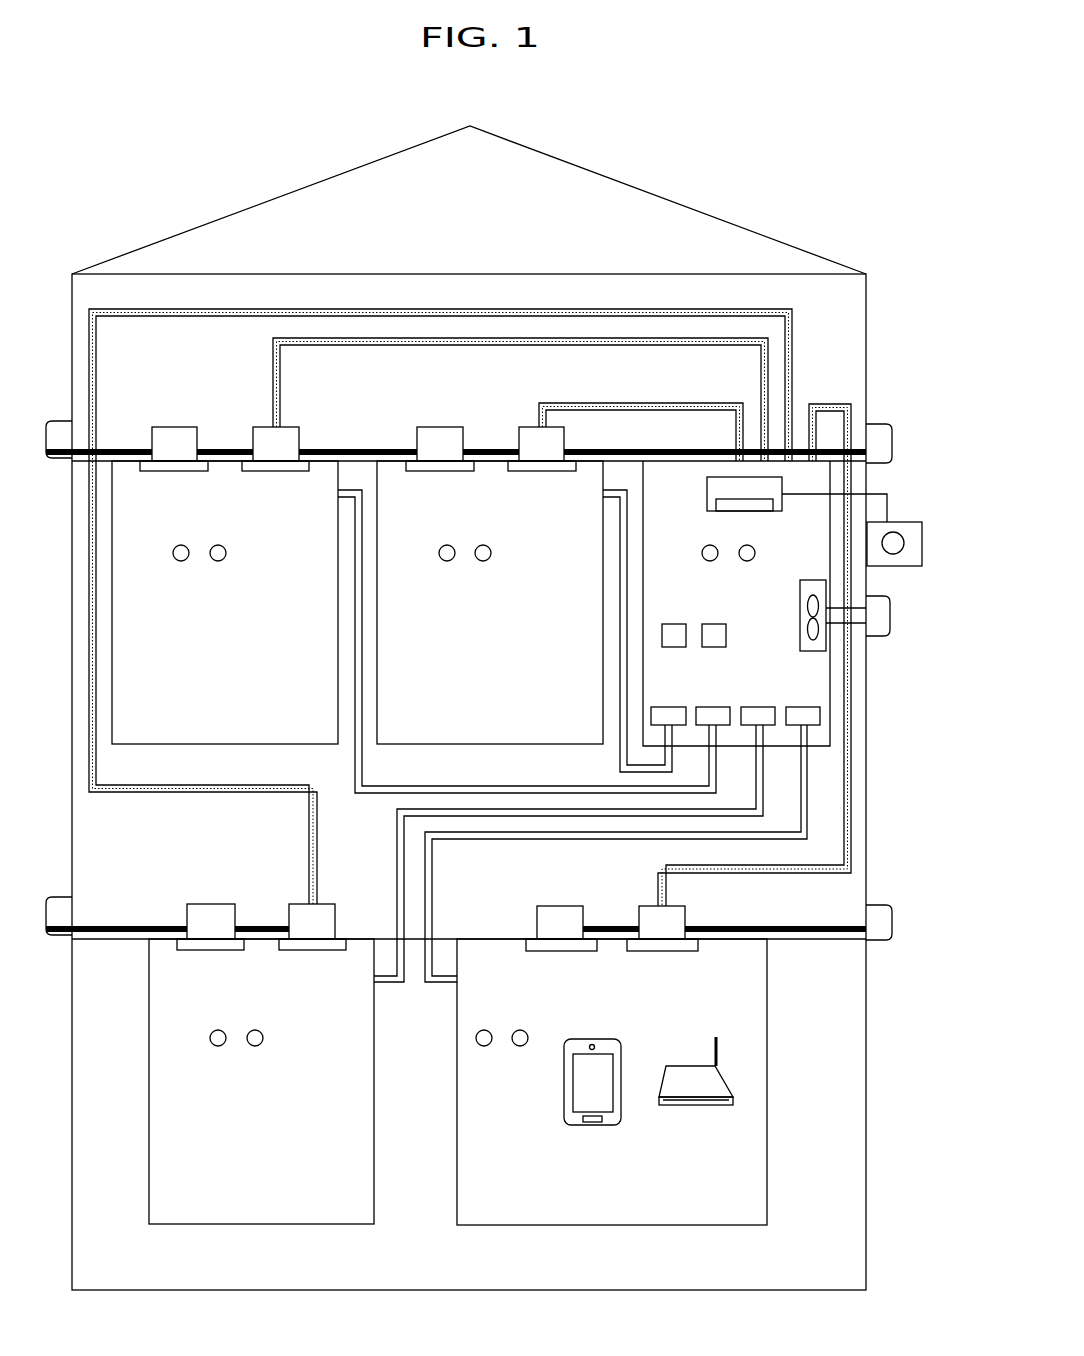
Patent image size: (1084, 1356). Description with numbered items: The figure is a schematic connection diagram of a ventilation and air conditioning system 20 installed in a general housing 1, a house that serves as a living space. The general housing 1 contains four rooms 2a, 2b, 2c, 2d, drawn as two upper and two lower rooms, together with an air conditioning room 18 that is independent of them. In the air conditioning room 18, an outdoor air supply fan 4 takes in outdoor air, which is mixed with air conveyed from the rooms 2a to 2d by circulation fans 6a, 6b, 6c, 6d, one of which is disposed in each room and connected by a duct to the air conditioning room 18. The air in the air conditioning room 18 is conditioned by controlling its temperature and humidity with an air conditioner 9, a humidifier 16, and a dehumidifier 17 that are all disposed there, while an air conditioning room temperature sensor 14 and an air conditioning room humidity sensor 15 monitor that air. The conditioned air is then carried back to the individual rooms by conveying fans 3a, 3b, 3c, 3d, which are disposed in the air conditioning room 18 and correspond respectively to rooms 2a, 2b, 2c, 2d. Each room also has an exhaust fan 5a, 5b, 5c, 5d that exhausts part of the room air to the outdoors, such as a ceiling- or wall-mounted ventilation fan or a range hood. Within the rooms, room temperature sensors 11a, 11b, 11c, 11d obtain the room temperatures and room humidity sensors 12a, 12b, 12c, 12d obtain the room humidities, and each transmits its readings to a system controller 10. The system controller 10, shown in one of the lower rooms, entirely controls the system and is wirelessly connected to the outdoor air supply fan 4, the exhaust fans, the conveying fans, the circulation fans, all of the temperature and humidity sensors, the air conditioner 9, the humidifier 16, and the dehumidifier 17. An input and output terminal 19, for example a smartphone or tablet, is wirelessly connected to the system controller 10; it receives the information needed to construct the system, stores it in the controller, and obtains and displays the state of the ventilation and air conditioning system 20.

The general housing 1 is at (269, 228).
The ventilation and air conditioning system 20 is at (682, 192).
The room 2a is at (530, 1208).
The room 2b is at (333, 1208).
The room 2c is at (328, 470).
The room 2d is at (393, 470).
The conveying fan 3a is at (793, 716).
The conveying fan 3b is at (748, 716).
The conveying fan 3c is at (703, 716).
The conveying fan 3d is at (658, 715).
The outdoor air supply fan 4 is at (818, 588).
The exhaust fan 5a is at (560, 920).
The exhaust fan 5b is at (215, 918).
The exhaust fan 5c is at (167, 440).
The exhaust fan 5d is at (448, 440).
The circulation fan 6a is at (655, 920).
The circulation fan 6b is at (305, 918).
The circulation fan 6c is at (270, 440).
The circulation fan 6d is at (530, 440).
The air conditioner 9 is at (719, 492).
The system controller 10 is at (681, 1075).
The room temperature sensor 11a is at (520, 1046).
The room temperature sensor 11b is at (257, 1046).
The room temperature sensor 11c is at (220, 561).
The room temperature sensor 11d is at (485, 561).
The room humidity sensor 12a is at (484, 1046).
The room humidity sensor 12b is at (218, 1046).
The room humidity sensor 12c is at (181, 561).
The room humidity sensor 12d is at (447, 561).
The air conditioning room temperature sensor 14 is at (704, 550).
The air conditioning room humidity sensor 15 is at (747, 561).
The humidifier 16 is at (678, 630).
The dehumidifier 17 is at (718, 630).
The air conditioning room 18 is at (822, 735).
The input and output terminal 19 is at (607, 1046).